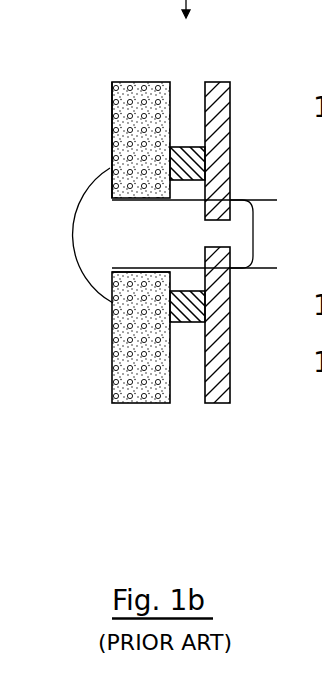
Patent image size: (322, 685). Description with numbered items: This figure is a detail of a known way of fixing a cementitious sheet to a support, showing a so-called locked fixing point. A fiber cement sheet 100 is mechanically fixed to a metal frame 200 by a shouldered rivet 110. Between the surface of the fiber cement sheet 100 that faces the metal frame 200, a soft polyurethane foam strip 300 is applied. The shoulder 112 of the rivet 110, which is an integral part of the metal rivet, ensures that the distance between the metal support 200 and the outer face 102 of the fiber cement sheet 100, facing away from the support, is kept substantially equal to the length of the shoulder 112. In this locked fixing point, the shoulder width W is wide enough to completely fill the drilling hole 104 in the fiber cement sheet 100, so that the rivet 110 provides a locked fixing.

The fiber cement sheet 100 is at (145, 84).
The outer face 102 is at (105, 105).
The drilling hole 104 is at (183, 187).
The shouldered rivet 110 is at (103, 250).
The shoulder 112 is at (142, 260).
The metal frame 200 is at (217, 84).
The soft polyurethane foam strip 300 is at (193, 322).
The shoulder width W is at (266, 208).